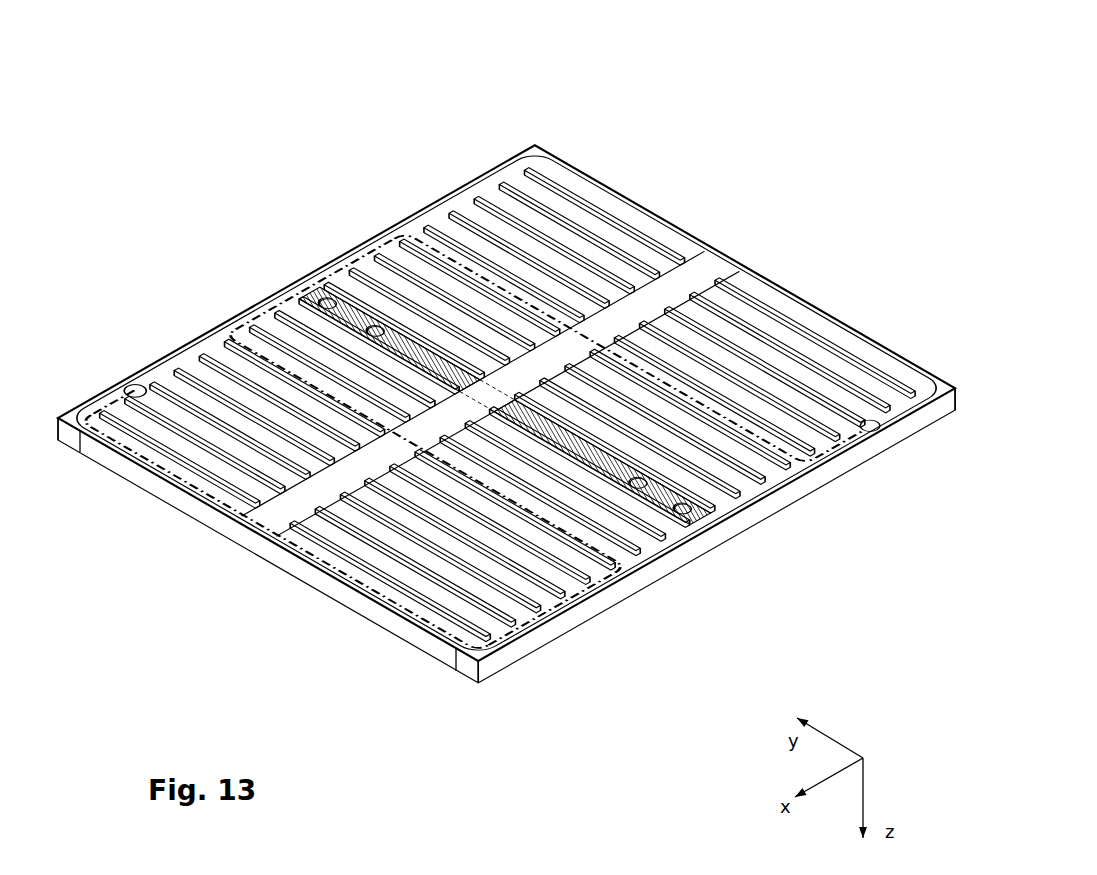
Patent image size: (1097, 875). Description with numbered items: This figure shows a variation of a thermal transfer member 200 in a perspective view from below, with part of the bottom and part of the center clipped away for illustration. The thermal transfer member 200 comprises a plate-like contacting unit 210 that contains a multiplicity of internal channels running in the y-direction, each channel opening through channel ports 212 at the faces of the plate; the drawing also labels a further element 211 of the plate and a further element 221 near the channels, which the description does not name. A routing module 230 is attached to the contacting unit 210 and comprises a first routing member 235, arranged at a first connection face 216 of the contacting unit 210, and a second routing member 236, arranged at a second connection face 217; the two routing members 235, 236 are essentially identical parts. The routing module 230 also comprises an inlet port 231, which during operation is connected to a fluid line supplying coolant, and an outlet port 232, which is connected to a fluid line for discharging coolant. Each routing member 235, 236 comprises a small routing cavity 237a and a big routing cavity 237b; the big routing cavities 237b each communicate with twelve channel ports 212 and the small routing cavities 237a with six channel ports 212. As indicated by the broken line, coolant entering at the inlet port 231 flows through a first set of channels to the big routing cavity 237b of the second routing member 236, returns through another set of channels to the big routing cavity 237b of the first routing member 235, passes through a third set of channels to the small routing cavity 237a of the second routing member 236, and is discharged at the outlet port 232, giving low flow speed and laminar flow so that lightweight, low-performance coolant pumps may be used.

The thermal transfer member 200 is at (253, 225).
The contacting unit 210 is at (207, 513).
The fins / ribs 211 is at (660, 233).
The channel port 212 is at (533, 147).
The first connection face 216 is at (300, 292).
The second connection face 217 is at (700, 522).
The mounting hole 221 is at (333, 296).
The routing module 230 is at (207, 332).
The inlet port 231 is at (136, 382).
The outlet port 232 is at (873, 420).
The first routing member 235 is at (344, 440).
The second routing member 236 is at (675, 424).
The small routing cavity 237a is at (177, 367).
The big routing cavity 237b is at (472, 198).